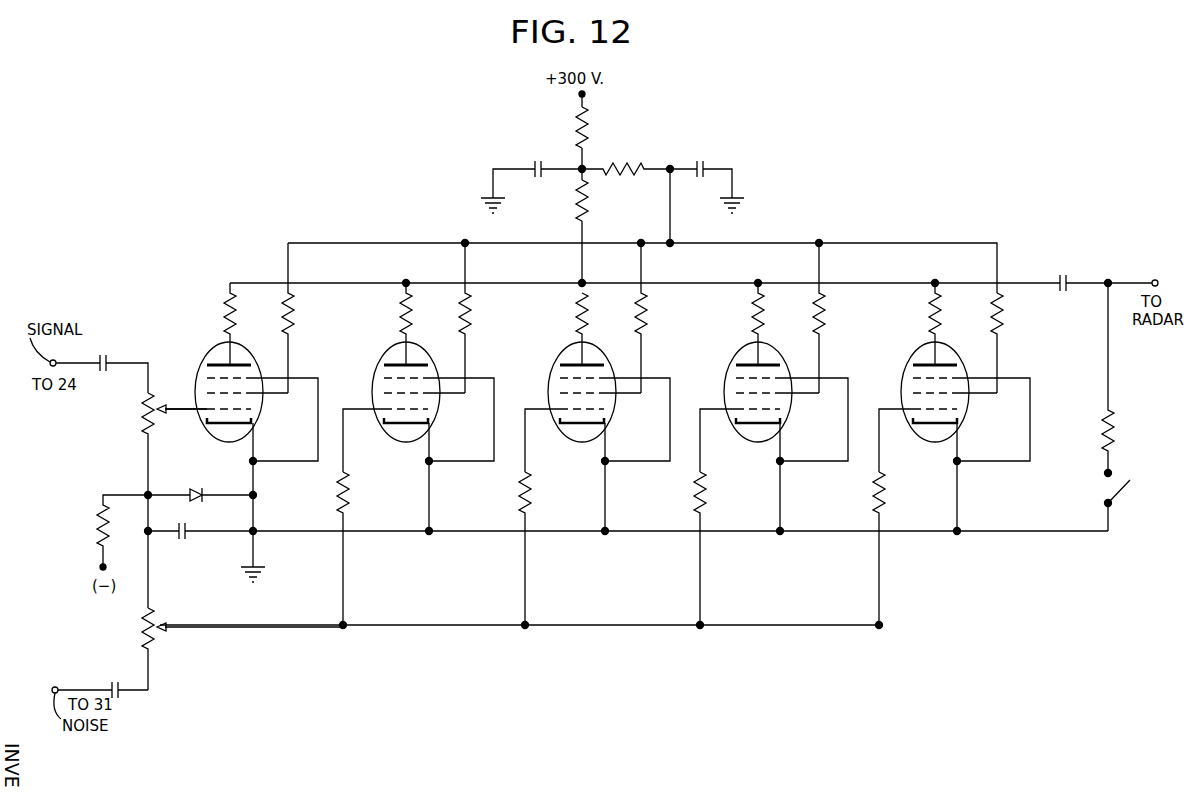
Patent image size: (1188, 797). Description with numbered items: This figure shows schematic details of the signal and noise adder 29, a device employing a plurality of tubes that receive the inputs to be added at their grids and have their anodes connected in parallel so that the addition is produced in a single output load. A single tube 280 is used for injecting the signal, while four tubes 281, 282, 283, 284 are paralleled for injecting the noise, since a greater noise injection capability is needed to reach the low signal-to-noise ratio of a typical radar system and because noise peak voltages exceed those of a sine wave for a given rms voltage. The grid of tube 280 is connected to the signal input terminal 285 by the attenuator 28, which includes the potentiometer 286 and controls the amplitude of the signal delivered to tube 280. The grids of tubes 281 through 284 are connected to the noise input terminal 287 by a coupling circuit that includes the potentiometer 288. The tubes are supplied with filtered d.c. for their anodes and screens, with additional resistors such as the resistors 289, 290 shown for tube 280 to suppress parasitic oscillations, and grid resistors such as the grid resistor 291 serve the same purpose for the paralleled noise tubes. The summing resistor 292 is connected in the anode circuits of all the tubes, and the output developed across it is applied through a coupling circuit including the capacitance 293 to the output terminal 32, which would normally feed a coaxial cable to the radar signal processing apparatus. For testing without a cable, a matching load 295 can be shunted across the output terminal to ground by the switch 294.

The attenuator 28 is at (93, 470).
The signal and noise adder 29 is at (558, 696).
The output terminal 32 is at (1156, 266).
The tube 280 is at (203, 360).
The tube 281 is at (380, 360).
The tube 282 is at (556, 360).
The tube 283 is at (732, 360).
The tube 284 is at (909, 360).
The signal input terminal 285 is at (56, 361).
The potentiometer 286 is at (146, 418).
The noise input terminal 287 is at (57, 688).
The potentiometer 288 is at (156, 612).
The resistor 289 is at (224, 305).
The resistor 290 is at (291, 305).
The grid resistor 291 is at (340, 490).
The summing resistor 292 is at (588, 212).
The capacitance 293 is at (1061, 274).
The switch 294 is at (1120, 501).
The matching load 295 is at (1103, 434).